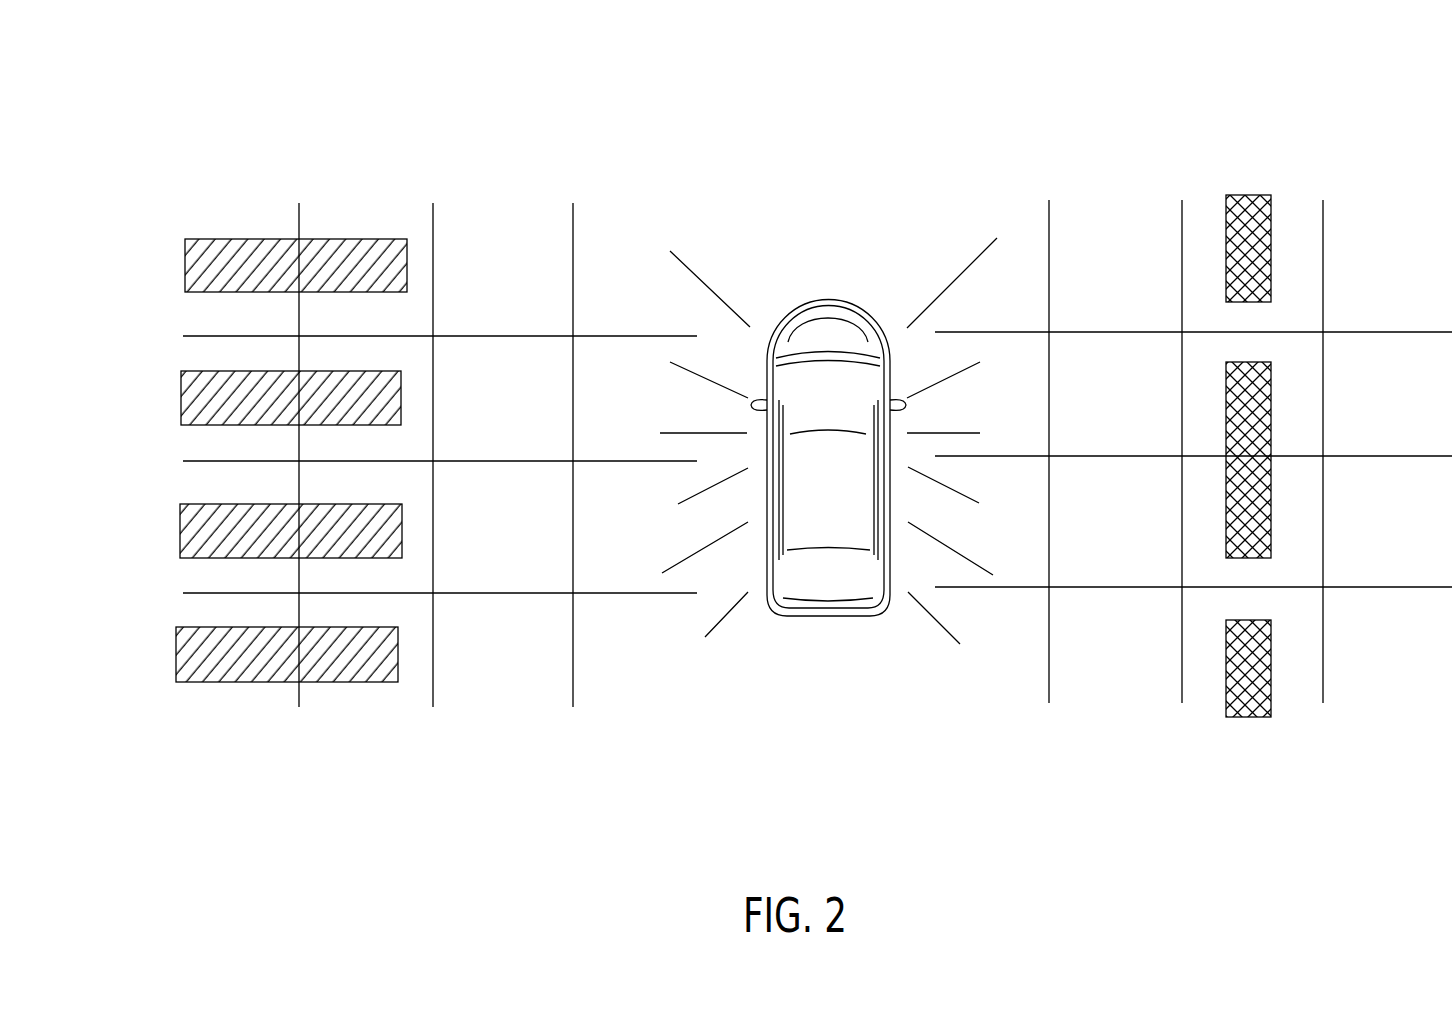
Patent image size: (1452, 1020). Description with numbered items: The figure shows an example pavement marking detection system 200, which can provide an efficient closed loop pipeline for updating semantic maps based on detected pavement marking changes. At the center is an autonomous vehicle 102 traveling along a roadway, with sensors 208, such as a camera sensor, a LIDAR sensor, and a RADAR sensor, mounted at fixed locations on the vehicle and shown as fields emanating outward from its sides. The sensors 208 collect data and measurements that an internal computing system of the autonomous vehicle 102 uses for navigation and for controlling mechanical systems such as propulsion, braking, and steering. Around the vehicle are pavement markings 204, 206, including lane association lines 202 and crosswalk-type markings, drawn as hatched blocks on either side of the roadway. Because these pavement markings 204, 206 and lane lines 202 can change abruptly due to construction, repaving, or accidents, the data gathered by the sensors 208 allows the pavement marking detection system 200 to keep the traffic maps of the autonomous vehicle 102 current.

The pavement marking detection system 200 is at (783, 105).
The lane lines 202 is at (433, 211).
The pavement markings 204 is at (185, 260).
The pavement markings 206 is at (1273, 253).
The sensors 208 is at (680, 242).
The autonomous vehicle 102 is at (817, 293).